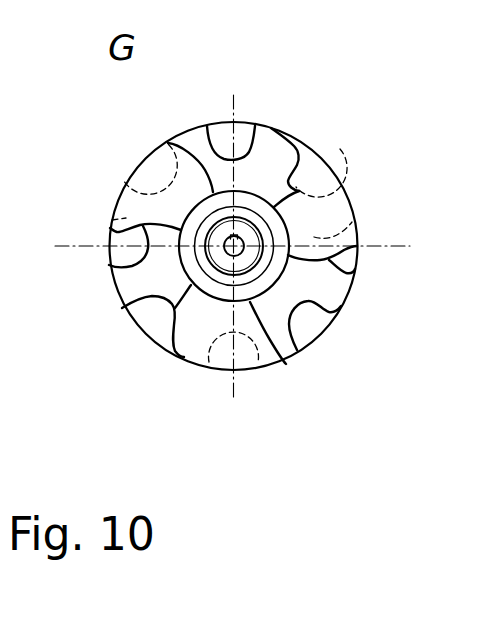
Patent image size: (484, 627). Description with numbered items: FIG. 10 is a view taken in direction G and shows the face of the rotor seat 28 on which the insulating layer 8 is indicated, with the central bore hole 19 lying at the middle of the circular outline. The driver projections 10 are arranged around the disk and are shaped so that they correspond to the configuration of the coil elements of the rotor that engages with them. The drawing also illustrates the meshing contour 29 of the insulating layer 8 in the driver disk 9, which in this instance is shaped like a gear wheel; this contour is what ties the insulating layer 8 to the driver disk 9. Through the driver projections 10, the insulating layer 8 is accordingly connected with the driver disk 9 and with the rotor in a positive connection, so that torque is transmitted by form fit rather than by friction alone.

The insulating layer 8 is at (187, 218).
The driver disk 9 is at (238, 123).
The driver projections 10 is at (153, 150).
The central bore hole 19 is at (237, 244).
The rotor seat 28 is at (266, 266).
The meshing contour 29 is at (118, 300).